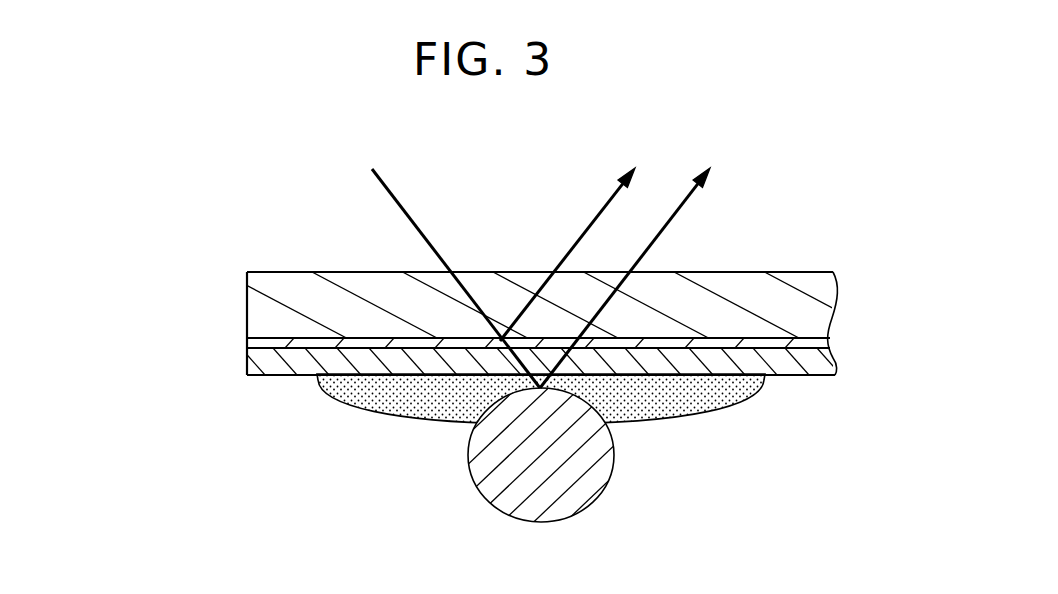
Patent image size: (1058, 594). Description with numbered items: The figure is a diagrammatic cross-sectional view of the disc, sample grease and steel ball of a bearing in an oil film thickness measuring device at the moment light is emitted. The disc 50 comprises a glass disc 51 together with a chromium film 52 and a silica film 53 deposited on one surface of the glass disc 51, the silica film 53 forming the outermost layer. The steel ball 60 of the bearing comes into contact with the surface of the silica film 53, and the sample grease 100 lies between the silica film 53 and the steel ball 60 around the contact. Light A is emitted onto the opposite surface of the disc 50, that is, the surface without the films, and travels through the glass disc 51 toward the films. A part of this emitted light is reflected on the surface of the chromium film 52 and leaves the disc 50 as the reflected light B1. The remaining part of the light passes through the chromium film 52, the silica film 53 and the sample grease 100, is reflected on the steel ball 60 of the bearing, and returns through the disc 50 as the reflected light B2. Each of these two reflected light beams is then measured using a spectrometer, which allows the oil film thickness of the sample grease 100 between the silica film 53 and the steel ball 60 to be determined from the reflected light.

The disc 50 is at (481, 333).
The glass disc 51 is at (260, 307).
The chromium film 52 is at (265, 345).
The silica film 53 is at (489, 385).
The sample grease 100 is at (390, 400).
The steel ball 60 is at (502, 495).
The emitted light A is at (403, 213).
The light reflected on the chromium film surface B1 is at (592, 222).
The light reflected on the steel ball B2 is at (663, 232).